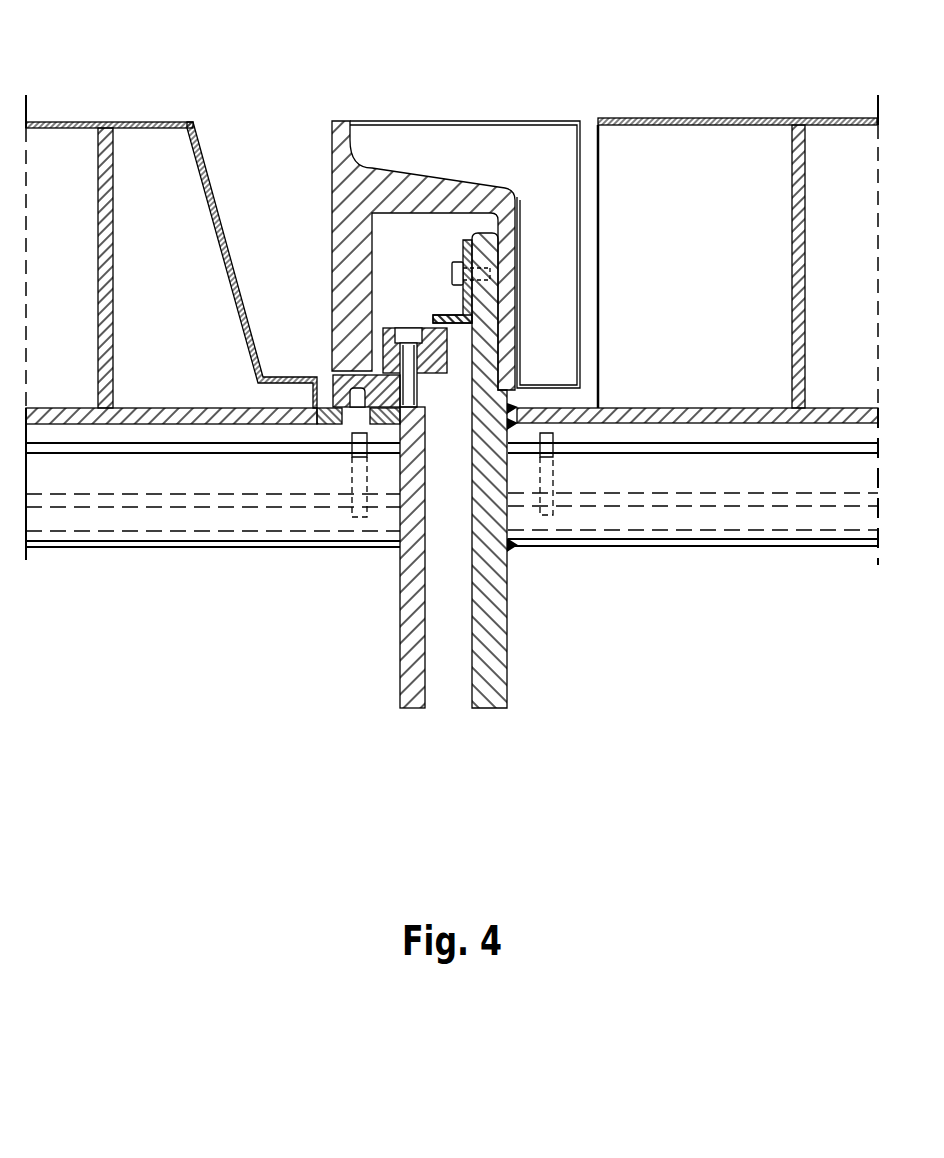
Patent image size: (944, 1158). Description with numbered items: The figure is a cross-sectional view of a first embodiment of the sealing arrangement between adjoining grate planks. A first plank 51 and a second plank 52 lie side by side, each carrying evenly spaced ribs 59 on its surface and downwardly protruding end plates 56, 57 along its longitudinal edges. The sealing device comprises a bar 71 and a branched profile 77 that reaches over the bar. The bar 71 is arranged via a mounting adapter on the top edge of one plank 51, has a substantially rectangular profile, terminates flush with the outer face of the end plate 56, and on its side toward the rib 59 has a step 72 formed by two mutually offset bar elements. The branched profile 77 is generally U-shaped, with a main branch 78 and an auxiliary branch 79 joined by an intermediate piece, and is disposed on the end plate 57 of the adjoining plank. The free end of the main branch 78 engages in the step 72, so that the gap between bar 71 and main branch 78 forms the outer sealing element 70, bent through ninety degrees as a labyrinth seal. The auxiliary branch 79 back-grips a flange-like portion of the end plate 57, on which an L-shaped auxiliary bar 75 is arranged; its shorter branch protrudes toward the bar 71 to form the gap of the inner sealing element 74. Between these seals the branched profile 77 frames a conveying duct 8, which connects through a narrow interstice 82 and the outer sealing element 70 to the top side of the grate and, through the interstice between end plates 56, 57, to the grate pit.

The conveying duct 8 is at (427, 240).
The first plank 51 is at (722, 548).
The second plank 52 is at (172, 549).
The end plate 56 is at (418, 655).
The end plate 57 is at (494, 649).
The rib 59 is at (77, 122).
The outer sealing element 70 is at (327, 367).
The bar 71 is at (373, 387).
The step 72 is at (390, 412).
The inner sealing element 74 is at (453, 327).
The auxiliary bar 75 is at (480, 297).
The branched profile 77 is at (378, 182).
The main branch 78 is at (353, 230).
The auxiliary branch 79 is at (503, 235).
The narrow interstice 82 is at (383, 328).